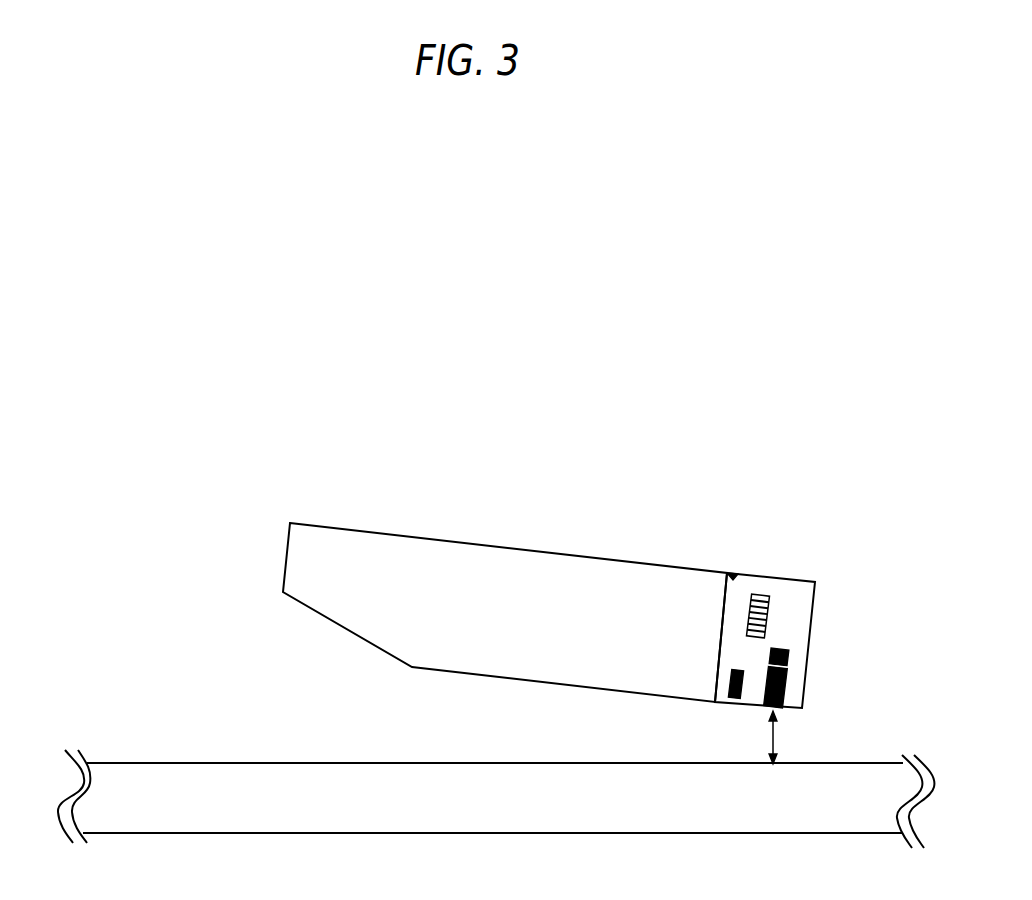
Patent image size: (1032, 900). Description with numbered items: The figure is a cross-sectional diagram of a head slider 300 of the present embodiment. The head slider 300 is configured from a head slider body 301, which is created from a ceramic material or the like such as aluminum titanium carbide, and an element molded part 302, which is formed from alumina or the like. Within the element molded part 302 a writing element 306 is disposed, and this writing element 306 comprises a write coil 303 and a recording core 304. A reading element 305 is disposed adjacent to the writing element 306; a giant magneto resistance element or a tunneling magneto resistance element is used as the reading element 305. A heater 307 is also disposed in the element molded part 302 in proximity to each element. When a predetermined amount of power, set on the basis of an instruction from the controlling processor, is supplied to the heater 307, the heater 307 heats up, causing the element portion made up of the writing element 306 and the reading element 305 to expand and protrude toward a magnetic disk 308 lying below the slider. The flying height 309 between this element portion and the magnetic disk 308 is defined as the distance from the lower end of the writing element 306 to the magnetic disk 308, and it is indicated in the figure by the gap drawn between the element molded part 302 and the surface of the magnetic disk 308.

The head slider 300 is at (549, 614).
The head slider body 301 is at (542, 568).
The element molded part 302 is at (764, 638).
The write coil 303 is at (780, 651).
The recording core 304 is at (788, 677).
The reading element 305 is at (722, 694).
The writing element 306 is at (788, 663).
The heater 307 is at (758, 594).
The magnetic disk 308 is at (282, 763).
The flying height 309 is at (793, 737).